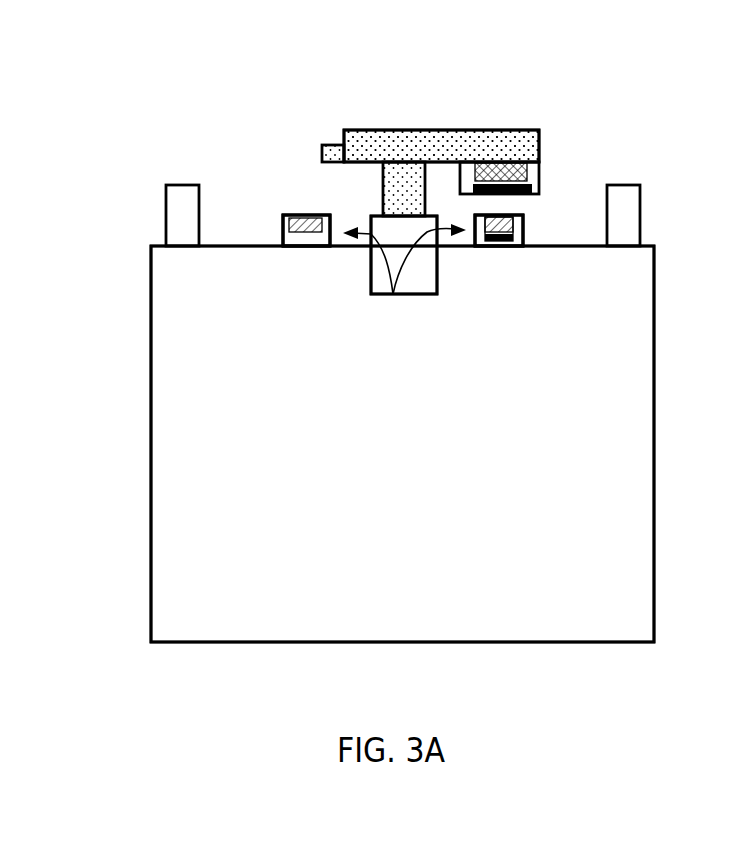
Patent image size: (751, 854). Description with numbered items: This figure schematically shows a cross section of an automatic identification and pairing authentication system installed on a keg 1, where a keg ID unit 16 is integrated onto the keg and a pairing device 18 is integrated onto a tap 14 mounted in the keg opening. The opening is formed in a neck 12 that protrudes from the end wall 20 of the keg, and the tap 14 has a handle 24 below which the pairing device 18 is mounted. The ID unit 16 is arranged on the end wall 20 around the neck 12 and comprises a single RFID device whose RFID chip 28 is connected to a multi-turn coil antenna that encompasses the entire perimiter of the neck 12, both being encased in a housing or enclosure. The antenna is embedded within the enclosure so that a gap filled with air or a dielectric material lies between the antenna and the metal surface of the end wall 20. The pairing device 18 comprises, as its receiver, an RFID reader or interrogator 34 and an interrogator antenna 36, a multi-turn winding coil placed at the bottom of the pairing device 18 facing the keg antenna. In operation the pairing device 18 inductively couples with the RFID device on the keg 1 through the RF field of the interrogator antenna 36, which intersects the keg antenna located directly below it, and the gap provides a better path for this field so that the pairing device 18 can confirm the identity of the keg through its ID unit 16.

The battery cell / device 1 is at (640, 575).
The neck 12 is at (370, 223).
The tap 14 is at (387, 130).
The keg identification unit 16 is at (393, 294).
The pairing device 18 is at (497, 161).
The end wall 20 is at (595, 246).
The handle 24 is at (427, 140).
The RFID chip 28 is at (505, 242).
The RFID reader 34 is at (515, 158).
The interrogator antenna 36 is at (533, 193).